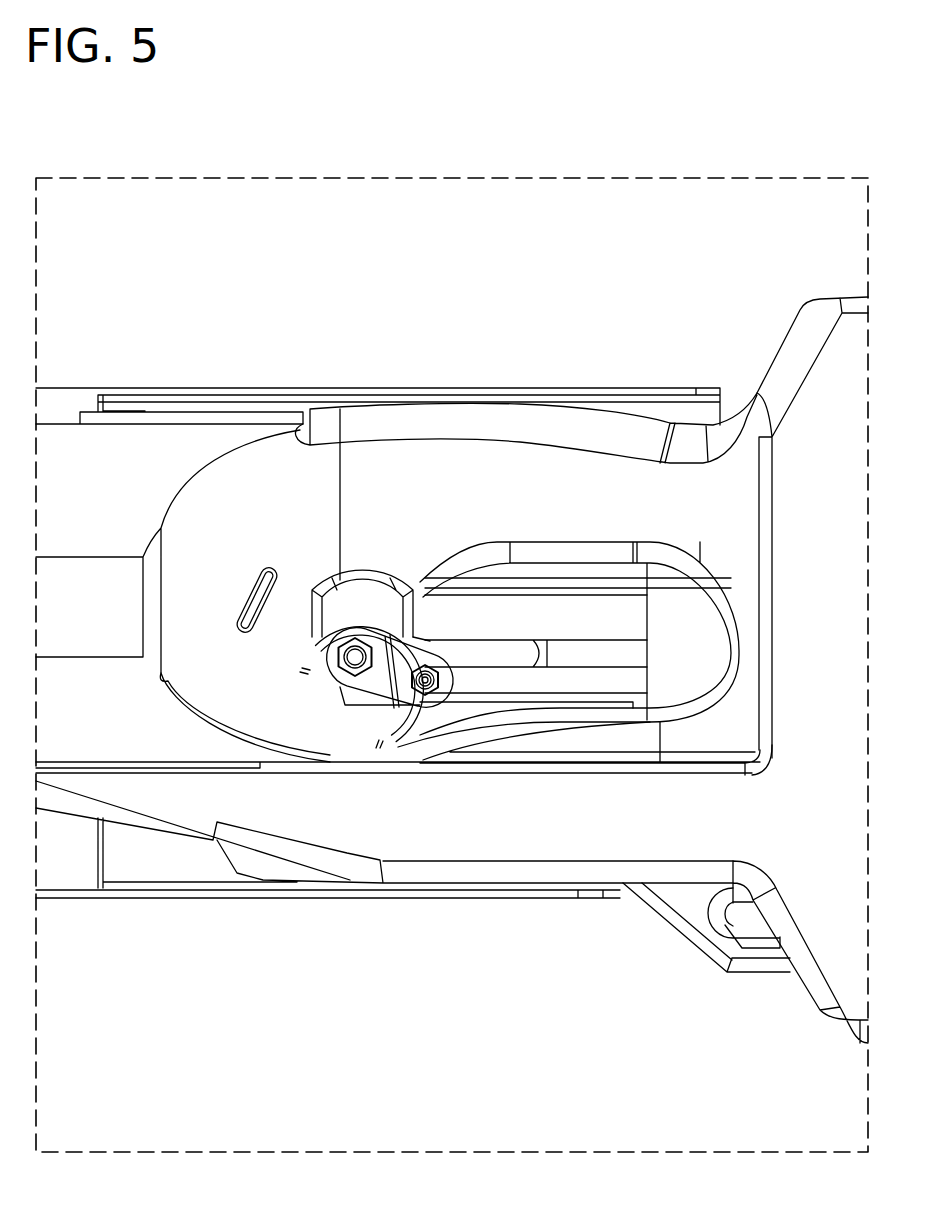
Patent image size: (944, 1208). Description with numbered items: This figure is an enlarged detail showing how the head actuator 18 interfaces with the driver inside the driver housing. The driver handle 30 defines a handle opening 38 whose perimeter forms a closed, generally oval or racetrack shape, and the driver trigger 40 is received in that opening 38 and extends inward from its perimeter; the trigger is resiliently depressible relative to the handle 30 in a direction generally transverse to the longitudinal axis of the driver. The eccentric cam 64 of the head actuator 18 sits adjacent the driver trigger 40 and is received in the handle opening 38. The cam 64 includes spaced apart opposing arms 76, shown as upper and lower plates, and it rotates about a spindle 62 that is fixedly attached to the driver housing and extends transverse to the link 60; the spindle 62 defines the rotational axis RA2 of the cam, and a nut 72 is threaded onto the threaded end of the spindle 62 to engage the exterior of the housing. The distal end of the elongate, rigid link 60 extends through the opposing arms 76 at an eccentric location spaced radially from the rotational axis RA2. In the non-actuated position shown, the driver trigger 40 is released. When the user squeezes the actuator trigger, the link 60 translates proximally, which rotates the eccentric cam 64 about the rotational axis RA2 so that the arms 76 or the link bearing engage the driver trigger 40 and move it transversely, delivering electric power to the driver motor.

The head actuator 18 is at (555, 670).
The driver handle 30 is at (590, 427).
The handle opening 38 is at (541, 578).
The driver trigger 40 is at (372, 601).
The link 60 is at (562, 652).
The spindle 62 is at (352, 648).
The eccentric cam 64 is at (423, 641).
The nut 72 is at (310, 715).
The opposing arms 76 is at (380, 695).
The rotational axis RA2 is at (427, 690).